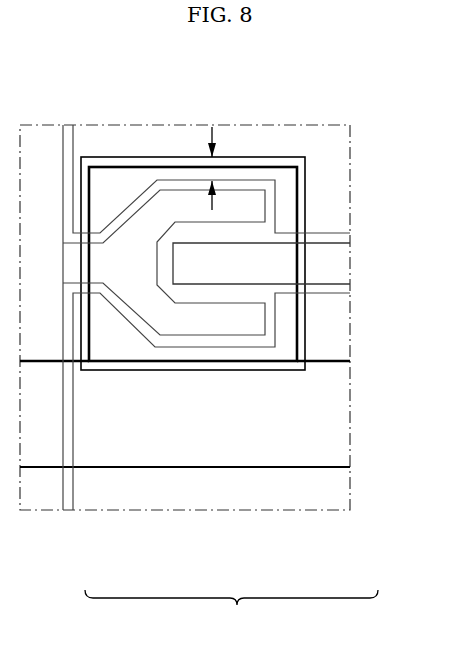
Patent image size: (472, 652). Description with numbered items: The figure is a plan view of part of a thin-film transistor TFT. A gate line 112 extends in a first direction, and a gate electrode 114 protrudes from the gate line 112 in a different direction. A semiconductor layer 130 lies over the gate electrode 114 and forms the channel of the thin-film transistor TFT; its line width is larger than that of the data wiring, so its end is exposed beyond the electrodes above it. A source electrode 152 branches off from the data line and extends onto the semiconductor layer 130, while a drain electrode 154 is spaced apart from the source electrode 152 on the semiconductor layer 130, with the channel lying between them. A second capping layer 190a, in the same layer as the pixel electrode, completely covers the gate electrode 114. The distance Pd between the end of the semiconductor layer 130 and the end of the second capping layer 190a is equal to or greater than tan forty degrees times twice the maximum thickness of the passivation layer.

The second capping layer 190a is at (306, 193).
The gate electrode 114 is at (297, 323).
The gate line 112 is at (163, 443).
The semiconductor layer 130 is at (127, 320).
The source electrode 152 is at (192, 325).
The drain electrode 154 is at (273, 265).
The distance Pd is at (213, 172).
The thin-film transistor TFT is at (231, 613).